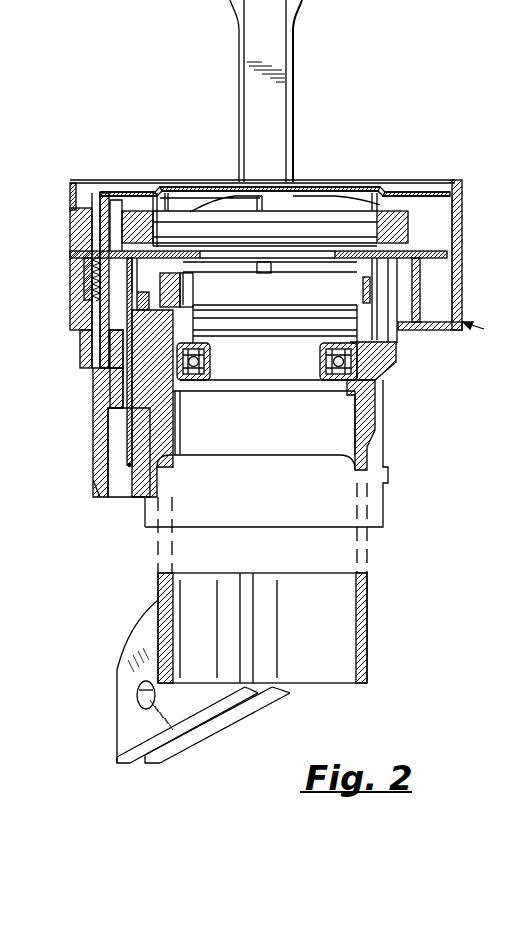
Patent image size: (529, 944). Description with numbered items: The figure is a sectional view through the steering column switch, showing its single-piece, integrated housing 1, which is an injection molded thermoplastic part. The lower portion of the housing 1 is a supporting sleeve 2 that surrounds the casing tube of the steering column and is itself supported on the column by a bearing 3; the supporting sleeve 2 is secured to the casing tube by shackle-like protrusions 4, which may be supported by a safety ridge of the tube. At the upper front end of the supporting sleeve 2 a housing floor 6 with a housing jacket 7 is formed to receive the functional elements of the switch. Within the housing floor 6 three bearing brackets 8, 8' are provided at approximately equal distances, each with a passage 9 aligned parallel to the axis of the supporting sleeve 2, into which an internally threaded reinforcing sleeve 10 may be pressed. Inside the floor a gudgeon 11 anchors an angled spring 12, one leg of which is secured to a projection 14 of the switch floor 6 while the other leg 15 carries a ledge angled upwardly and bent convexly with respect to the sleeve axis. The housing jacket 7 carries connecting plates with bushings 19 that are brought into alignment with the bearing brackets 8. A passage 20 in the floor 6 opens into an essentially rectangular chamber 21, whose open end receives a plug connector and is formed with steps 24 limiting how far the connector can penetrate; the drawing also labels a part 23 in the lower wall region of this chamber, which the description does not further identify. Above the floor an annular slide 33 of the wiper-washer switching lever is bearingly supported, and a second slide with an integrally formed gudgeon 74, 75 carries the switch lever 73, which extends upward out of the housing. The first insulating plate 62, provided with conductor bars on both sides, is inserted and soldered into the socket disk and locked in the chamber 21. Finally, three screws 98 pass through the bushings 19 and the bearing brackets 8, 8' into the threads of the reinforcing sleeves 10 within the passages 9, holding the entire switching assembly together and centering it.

The housing 1 is at (479, 329).
The supporting sleeve 2 is at (372, 413).
The bearing 3 is at (370, 380).
The shackle-like protrusions 4 is at (150, 783).
The housing floor 6 is at (448, 333).
The housing jacket 7 is at (458, 221).
The bearing bracket 8 is at (244, 280).
The bearing bracket 8' is at (400, 314).
The passage 9 is at (92, 347).
The reinforcing sleeve 10 is at (85, 266).
The gudgeon 11 is at (141, 300).
The angled spring 12 is at (152, 403).
The projection 14 is at (176, 293).
The leg 15 is at (196, 325).
The bushings 19 is at (72, 228).
The passage 20 is at (98, 390).
The chamber 21 is at (110, 398).
The bottom portion 23 is at (112, 482).
The steps 24 is at (120, 410).
The annular slide 33 is at (250, 322).
The first insulating plate 62 is at (134, 470).
The switch lever 73 is at (272, 53).
The gudgeon 74 is at (266, 273).
The gudgeon 75 is at (266, 186).
The screws 98 is at (92, 207).